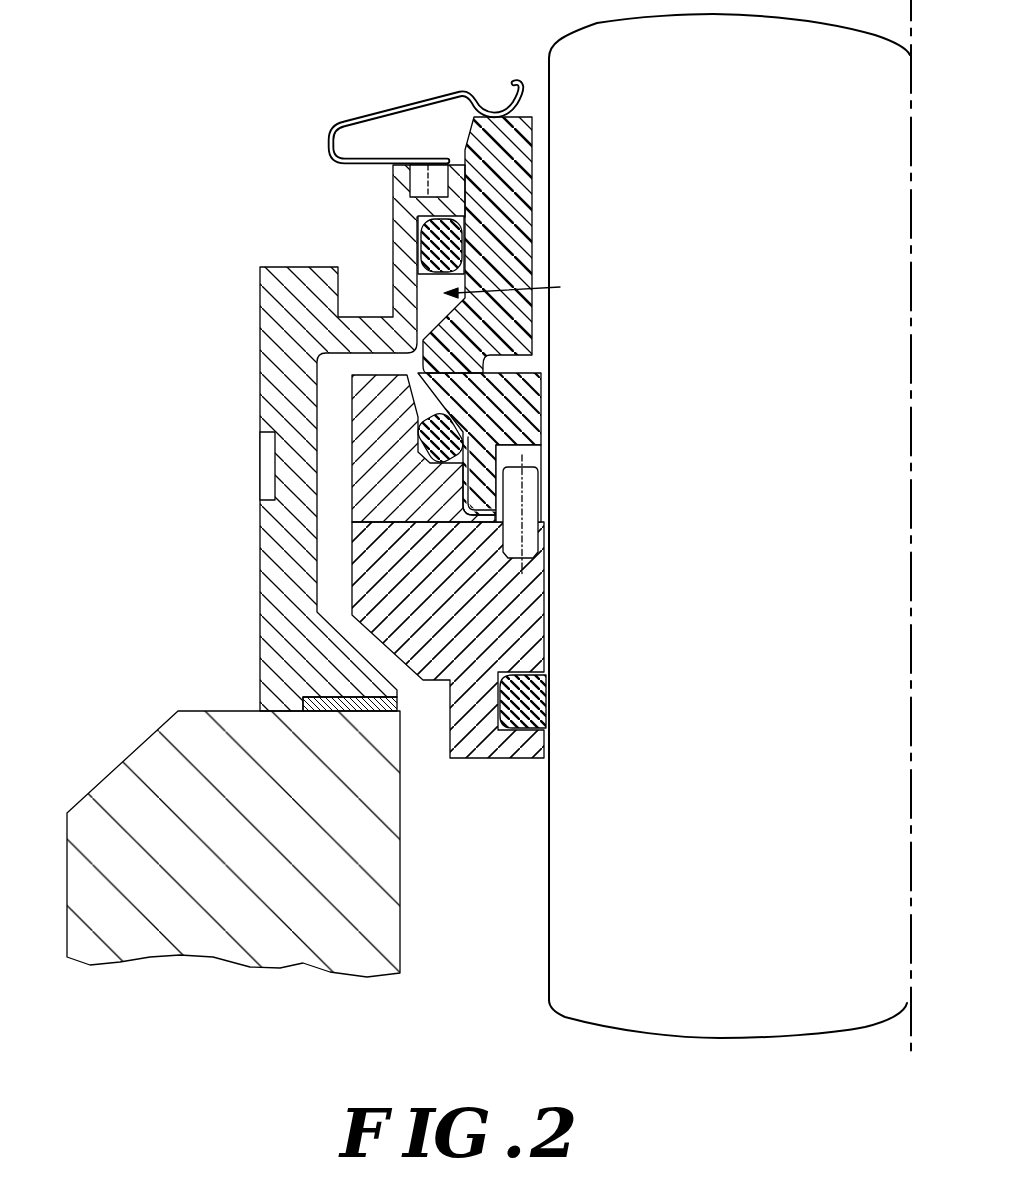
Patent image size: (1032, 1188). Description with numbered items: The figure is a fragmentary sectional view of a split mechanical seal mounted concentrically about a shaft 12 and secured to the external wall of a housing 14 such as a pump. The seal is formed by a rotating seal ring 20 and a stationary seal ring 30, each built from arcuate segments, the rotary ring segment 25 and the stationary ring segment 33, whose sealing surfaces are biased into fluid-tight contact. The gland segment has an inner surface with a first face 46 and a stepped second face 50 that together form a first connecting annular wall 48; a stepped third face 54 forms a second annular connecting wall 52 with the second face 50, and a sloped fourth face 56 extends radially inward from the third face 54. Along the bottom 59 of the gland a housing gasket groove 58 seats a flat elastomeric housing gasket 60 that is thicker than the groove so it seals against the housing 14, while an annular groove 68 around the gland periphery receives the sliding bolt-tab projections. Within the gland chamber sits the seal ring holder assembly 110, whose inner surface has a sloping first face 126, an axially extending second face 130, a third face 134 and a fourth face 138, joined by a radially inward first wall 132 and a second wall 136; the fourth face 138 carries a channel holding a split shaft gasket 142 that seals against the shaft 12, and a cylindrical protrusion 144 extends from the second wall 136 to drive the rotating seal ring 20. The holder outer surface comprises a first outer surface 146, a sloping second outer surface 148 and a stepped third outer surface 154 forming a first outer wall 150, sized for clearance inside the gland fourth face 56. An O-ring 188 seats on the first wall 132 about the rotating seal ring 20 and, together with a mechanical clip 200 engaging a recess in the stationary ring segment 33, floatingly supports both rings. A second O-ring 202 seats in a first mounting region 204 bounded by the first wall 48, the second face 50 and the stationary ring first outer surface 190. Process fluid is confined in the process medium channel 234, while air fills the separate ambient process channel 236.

The shaft 12 is at (583, 952).
The housing 14 is at (193, 943).
The rotating seal ring 20 is at (448, 680).
The rotary seal ring segment 25 is at (540, 437).
The stationary seal ring 30 is at (528, 245).
The stationary seal ring segment 33 is at (528, 245).
The first face 46 is at (528, 245).
The first connecting annular wall 48 is at (398, 207).
The second face 50 is at (428, 287).
The second annular connecting wall 52 is at (320, 438).
The third face 54 is at (320, 438).
The sloped fourth face 56 is at (332, 438).
The housing gasket groove 58 is at (405, 708).
The bottom 59 is at (332, 438).
The housing gasket 60 is at (332, 438).
The annular groove 68 is at (362, 438).
The seal ring holder assembly 110 is at (520, 760).
The first face 126 is at (412, 400).
The second face 130 is at (262, 440).
The first wall 132 is at (540, 437).
The third face 134 is at (347, 448).
The second wall 136 is at (545, 517).
The fourth face 138 is at (514, 680).
The split shaft gasket 142 is at (543, 702).
The cylindrical protrusion 144 is at (584, 510).
The first outer surface 146 is at (450, 470).
The second outer surface 148 is at (495, 680).
The first outer wall 150 is at (495, 680).
The third outer surface 154 is at (495, 680).
The O-ring 188 is at (462, 437).
The first outer surface 190 is at (460, 278).
The mechanical clip 200 is at (462, 93).
The O-ring 202 is at (467, 235).
The first mounting region 204 is at (530, 290).
The process medium channel 234 is at (333, 553).
The ambient process channel 236 is at (540, 338).